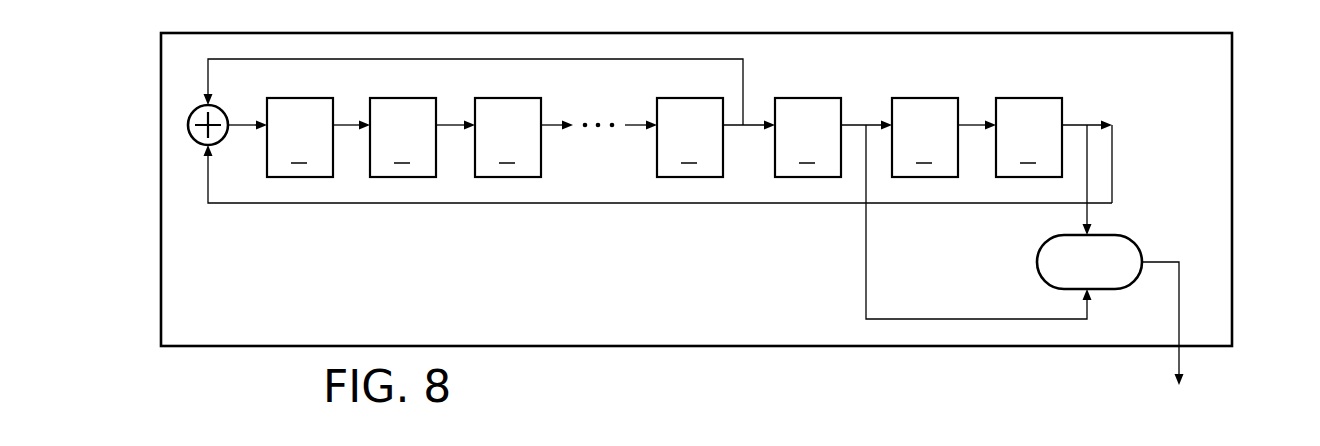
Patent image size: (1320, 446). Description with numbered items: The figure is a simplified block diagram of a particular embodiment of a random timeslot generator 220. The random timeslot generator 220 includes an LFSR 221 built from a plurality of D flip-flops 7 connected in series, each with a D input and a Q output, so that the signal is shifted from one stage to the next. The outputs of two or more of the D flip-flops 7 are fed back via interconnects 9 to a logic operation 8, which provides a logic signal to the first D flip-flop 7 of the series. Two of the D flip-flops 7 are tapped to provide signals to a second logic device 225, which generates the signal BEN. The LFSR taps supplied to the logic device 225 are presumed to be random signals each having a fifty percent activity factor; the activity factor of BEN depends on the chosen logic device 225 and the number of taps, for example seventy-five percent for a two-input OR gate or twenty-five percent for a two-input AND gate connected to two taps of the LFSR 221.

The D flip-flops 7 is at (664, 137).
The logic operation 8 is at (221, 106).
The interconnects 9 is at (599, 60).
The random timeslot generator 220 is at (1233, 63).
The LFSR 221 is at (1087, 73).
The second logic device 225 is at (1037, 257).